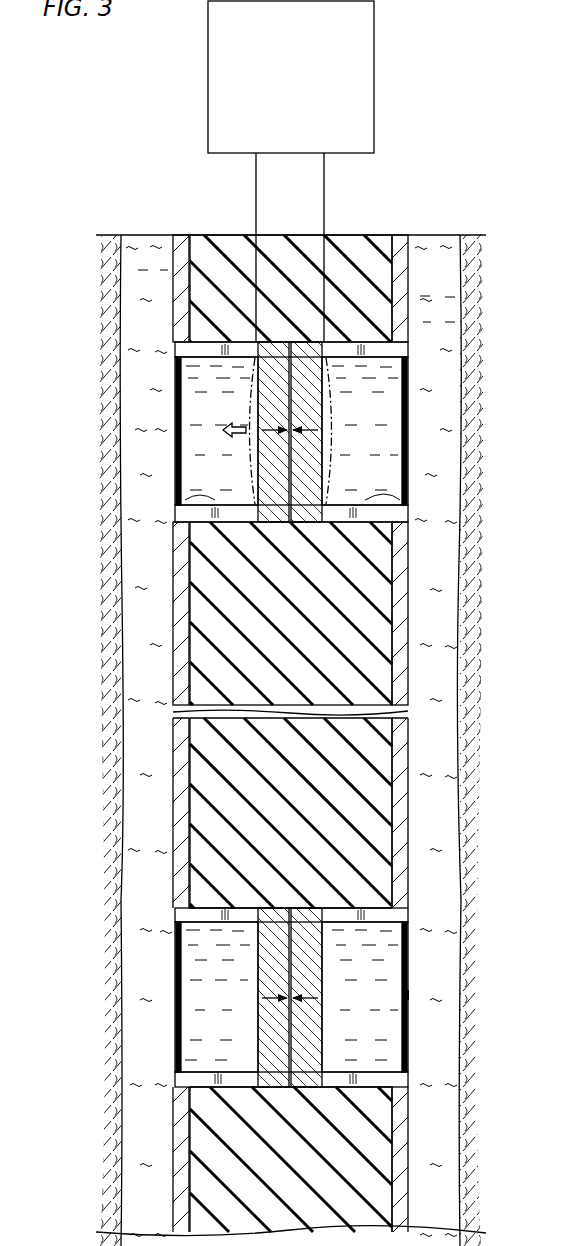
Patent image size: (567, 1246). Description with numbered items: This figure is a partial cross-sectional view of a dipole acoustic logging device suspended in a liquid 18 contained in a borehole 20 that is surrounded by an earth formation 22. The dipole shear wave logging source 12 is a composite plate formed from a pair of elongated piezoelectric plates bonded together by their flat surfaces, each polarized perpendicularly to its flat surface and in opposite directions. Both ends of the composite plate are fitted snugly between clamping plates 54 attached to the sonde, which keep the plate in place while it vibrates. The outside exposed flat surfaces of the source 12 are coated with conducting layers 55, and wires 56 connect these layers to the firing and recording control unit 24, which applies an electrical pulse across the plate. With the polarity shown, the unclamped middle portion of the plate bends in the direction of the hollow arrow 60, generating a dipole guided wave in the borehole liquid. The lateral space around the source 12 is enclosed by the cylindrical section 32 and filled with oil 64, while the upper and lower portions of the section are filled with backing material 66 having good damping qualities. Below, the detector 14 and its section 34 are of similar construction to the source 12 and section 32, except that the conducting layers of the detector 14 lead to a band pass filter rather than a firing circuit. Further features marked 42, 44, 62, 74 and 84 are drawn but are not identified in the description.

The firing and recording control unit 24 is at (376, 62).
The wires 56 is at (324, 200).
The borehole 20 is at (444, 227).
The earth formation 22 is at (502, 286).
The liquid 18 is at (441, 286).
The backing material 66 is at (303, 288).
The cylindrical section 32 is at (160, 375).
The section 34 is at (160, 952).
The clamping plates 54 is at (187, 340).
The dipole shear wave logging source 12 is at (251, 405).
The piezoelectric element 62 is at (322, 522).
The conducting layers 55 is at (250, 380).
The oil 64 is at (190, 447).
The hollow arrow 60 is at (229, 444).
The chamber wall 42 is at (408, 428).
The wall portion 74 is at (510, 377).
The detector 14 is at (251, 1007).
The lower chamber wall 44 is at (408, 995).
The lower wall portion 84 is at (513, 1021).